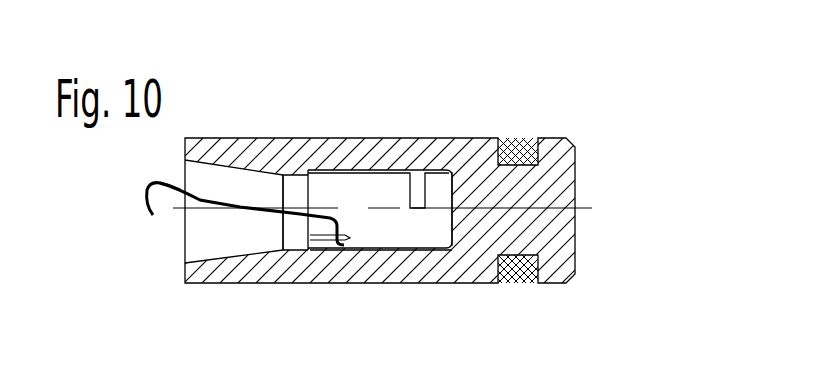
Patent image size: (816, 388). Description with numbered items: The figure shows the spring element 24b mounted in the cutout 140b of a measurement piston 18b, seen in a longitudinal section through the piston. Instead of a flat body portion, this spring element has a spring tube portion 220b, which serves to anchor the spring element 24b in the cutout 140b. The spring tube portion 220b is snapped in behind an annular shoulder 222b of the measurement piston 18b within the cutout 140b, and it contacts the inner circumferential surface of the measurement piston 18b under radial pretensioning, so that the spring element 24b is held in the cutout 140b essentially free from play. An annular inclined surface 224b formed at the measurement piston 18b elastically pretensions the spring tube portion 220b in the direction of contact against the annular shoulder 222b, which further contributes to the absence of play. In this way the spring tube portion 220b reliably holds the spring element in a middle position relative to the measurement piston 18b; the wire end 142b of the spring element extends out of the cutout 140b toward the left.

The measurement piston 18b is at (473, 148).
The spring element 24b is at (247, 203).
The cutout 140b is at (295, 187).
The wire end hook 142b is at (150, 183).
The spring tube portion 220b is at (387, 183).
The annular shoulder 222b is at (308, 253).
The annular inclined surface 224b is at (452, 250).